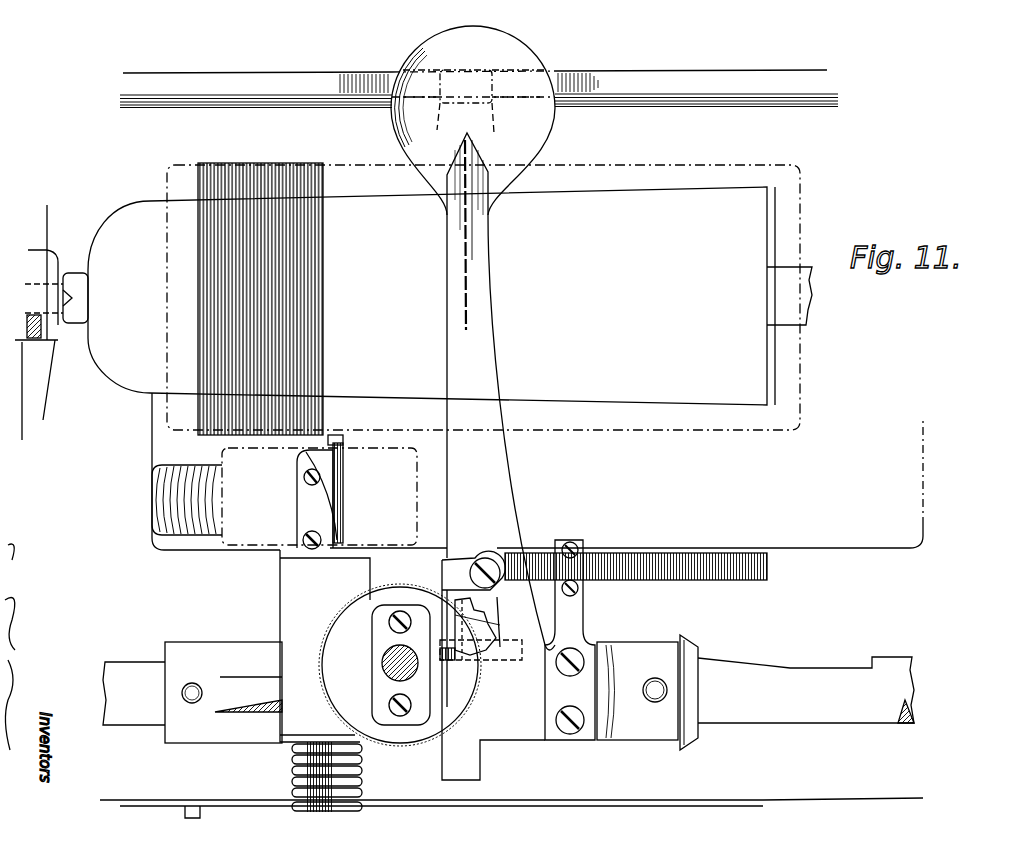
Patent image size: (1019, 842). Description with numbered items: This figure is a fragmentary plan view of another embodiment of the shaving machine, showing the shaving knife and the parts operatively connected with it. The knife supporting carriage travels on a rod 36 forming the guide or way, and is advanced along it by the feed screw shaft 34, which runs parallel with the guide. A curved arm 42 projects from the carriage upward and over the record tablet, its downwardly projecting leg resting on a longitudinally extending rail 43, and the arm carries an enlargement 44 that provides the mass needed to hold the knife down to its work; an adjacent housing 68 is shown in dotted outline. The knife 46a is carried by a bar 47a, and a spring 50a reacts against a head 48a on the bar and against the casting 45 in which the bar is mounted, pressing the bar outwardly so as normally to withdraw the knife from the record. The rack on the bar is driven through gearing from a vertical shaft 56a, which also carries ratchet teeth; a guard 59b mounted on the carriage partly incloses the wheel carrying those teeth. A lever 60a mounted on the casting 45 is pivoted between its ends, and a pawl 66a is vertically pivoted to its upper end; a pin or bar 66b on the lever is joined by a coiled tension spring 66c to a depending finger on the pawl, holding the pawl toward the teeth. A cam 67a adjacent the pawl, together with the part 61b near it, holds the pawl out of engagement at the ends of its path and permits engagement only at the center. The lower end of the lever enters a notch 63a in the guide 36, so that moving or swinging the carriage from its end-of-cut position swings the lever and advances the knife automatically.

The rail 43 is at (680, 72).
The enlargement 44 is at (473, 120).
The solenoid casing 68 is at (634, 197).
The curved arm 42 is at (493, 391).
The knife 46a is at (340, 434).
The bar 47a is at (343, 541).
The lever 60a is at (452, 566).
The pin or bar 66b is at (451, 620).
The pawl 66a is at (500, 625).
The coiled tension spring 66c is at (481, 736).
The feed screw shaft 34 is at (734, 576).
The guard 59b is at (340, 608).
The casting 45 is at (287, 612).
The vertical shaft 56a is at (381, 663).
The pawl 61b is at (492, 653).
The cam 67a is at (470, 668).
The notch 63a is at (826, 671).
The rod 36 is at (757, 718).
The spring 50a is at (362, 771).
The head 48a is at (366, 808).